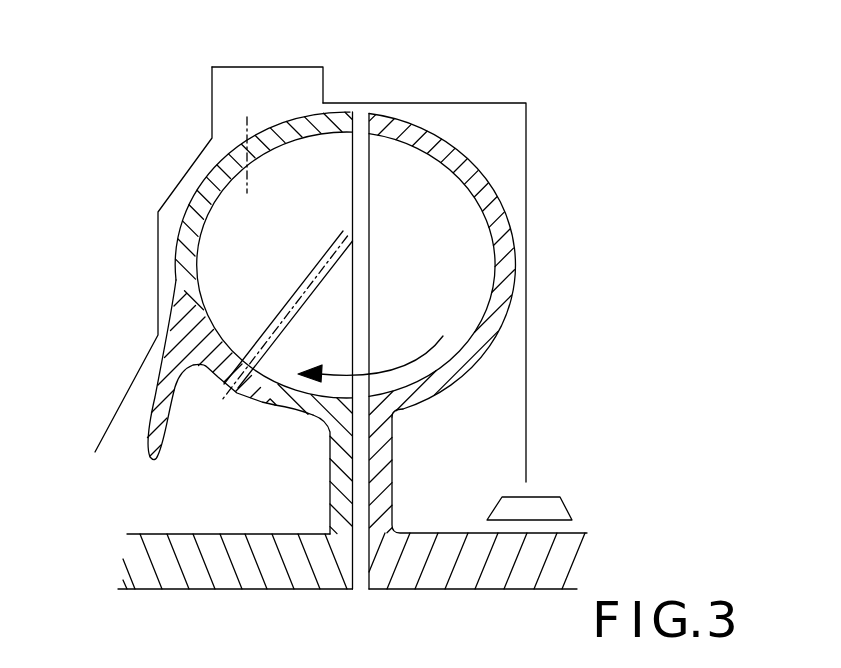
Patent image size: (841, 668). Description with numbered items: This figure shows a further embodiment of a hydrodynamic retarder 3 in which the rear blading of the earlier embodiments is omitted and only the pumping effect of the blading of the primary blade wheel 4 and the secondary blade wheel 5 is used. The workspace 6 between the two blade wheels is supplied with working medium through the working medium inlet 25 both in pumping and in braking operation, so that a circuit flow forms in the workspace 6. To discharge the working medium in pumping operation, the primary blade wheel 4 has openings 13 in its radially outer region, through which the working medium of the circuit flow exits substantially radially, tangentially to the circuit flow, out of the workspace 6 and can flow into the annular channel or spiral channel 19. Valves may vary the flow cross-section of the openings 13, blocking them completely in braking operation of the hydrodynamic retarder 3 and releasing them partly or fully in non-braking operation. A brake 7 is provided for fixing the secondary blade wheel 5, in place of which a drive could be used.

The hydrodynamic retarder 3 is at (559, 94).
The primary blade wheel 4 is at (284, 413).
The secondary blade wheel 5 is at (449, 378).
The workspace 6 is at (333, 182).
The brake 7 is at (542, 500).
The openings 13 is at (245, 141).
The annular channel/spiral channel 19 is at (283, 108).
The working medium inlet 25 is at (257, 347).